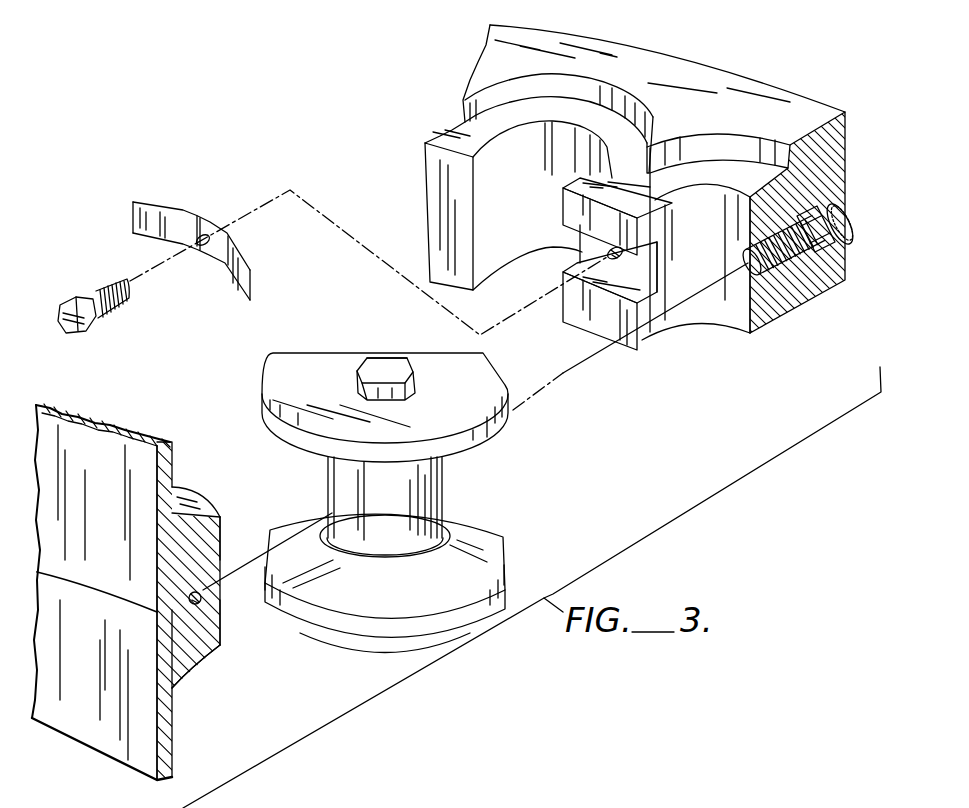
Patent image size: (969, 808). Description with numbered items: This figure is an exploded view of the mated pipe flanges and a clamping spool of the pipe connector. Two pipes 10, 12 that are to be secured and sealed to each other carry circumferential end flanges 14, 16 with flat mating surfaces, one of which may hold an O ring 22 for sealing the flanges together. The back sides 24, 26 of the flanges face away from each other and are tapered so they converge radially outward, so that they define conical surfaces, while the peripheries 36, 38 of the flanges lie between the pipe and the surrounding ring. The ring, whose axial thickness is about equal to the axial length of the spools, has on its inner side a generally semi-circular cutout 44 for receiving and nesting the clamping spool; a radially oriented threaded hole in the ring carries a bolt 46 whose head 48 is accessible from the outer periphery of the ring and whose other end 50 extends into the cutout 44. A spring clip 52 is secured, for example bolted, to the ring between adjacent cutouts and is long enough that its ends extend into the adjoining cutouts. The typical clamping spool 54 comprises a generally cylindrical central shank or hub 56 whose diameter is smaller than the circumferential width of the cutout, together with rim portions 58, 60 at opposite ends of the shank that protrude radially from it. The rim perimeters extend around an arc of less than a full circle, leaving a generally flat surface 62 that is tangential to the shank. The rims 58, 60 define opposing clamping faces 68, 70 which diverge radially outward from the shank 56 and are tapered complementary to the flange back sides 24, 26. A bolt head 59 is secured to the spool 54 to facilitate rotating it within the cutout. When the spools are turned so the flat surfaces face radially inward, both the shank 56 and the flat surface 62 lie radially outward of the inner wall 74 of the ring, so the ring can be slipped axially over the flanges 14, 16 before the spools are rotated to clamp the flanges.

The pipe 10 is at (133, 430).
The pipe 12 is at (147, 777).
The end flange 14 is at (193, 565).
The end flange 16 is at (197, 635).
The O ring 22 is at (207, 592).
The back side of flange 24 is at (193, 500).
The back side of flange 26 is at (187, 677).
The periphery of pipe flange 36 is at (220, 520).
The periphery of pipe flange 38 is at (220, 642).
The cutout 44 is at (712, 200).
The bolt 46 is at (818, 258).
The bolt head 48 is at (850, 222).
The bolt end 50 is at (750, 275).
The spring clip 52 is at (200, 222).
The clamping spool 54 is at (410, 495).
The shank 56 is at (433, 498).
The rim 58 is at (335, 365).
The bolt head 59 is at (387, 367).
The rim 60 is at (503, 590).
The flat surface 62 is at (407, 333).
The clamping face 68 is at (493, 433).
The clamping face 70 is at (390, 600).
The inner wall of ring 74 is at (573, 208).